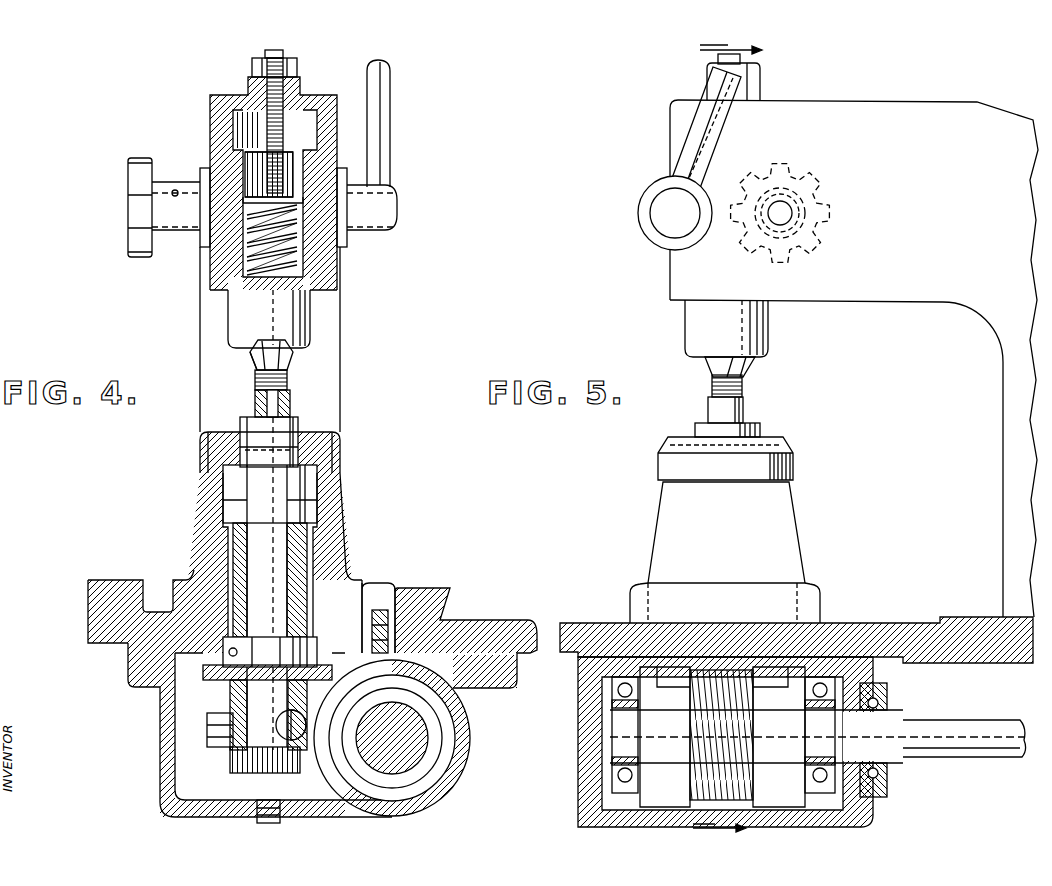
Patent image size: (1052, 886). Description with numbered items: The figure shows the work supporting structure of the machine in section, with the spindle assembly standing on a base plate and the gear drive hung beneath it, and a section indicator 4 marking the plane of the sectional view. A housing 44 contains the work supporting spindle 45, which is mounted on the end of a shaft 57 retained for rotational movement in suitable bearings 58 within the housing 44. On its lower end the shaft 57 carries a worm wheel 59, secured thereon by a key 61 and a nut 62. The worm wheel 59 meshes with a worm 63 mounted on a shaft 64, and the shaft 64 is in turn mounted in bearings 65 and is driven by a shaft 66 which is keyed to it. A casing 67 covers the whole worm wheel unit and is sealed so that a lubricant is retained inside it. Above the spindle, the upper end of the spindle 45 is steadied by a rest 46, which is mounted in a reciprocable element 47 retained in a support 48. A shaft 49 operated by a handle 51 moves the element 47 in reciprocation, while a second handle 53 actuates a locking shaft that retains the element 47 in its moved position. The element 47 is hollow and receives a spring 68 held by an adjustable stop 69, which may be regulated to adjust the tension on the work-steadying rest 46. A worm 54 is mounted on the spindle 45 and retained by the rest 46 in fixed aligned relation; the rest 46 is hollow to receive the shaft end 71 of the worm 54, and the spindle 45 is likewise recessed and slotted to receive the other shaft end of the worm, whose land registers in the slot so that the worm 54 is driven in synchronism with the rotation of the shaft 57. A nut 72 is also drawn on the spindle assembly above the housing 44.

In FIG. 5, the section line indicator 4 is at (733, 445).
In FIG. 4, the housing 44 is at (207, 522).
In FIG. 5, the housing 44 is at (778, 518).
In FIG. 4, the work supporting spindle 45 is at (290, 397).
In FIG. 5, the work supporting spindle 45 is at (742, 418).
In FIG. 4, the rest 46 is at (290, 358).
In FIG. 5, the rest 46 is at (733, 372).
In FIG. 4, the reciprocable element 47 is at (317, 317).
In FIG. 5, the reciprocable element 47 is at (750, 337).
In FIG. 4, the support 48 is at (217, 108).
In FIG. 5, the support 48 is at (870, 122).
In FIG. 5, the shaft 49 is at (662, 217).
In FIG. 4, the handle 51 is at (377, 163).
In FIG. 5, the handle 51 is at (703, 137).
In FIG. 4, the handle 53 is at (137, 173).
In FIG. 5, the handle 53 is at (827, 193).
In FIG. 4, the worm 54 is at (257, 385).
In FIG. 5, the worm 54 is at (710, 388).
In FIG. 4, the shaft 57 is at (280, 543).
In FIG. 4, the bearings 58 is at (293, 507).
In FIG. 4, the worm wheel 59 is at (216, 750).
In FIG. 4, the key 61 is at (295, 745).
In FIG. 4, the nut 62 is at (278, 775).
In FIG. 4, the worm 63 is at (432, 727).
In FIG. 5, the worm 63 is at (703, 777).
In FIG. 4, the shaft 64 is at (393, 750).
In FIG. 5, the shaft 64 is at (790, 753).
In FIG. 5, the bearings 65 is at (620, 732).
In FIG. 5, the shaft 66 is at (938, 727).
In FIG. 4, the casing 67 is at (417, 800).
In FIG. 5, the casing 67 is at (610, 807).
In FIG. 4, the spring 68 is at (305, 260).
In FIG. 4, the adjustable stop 69 is at (293, 147).
In FIG. 4, the shaft end 71 is at (263, 363).
In FIG. 4, the nut 72 is at (257, 405).